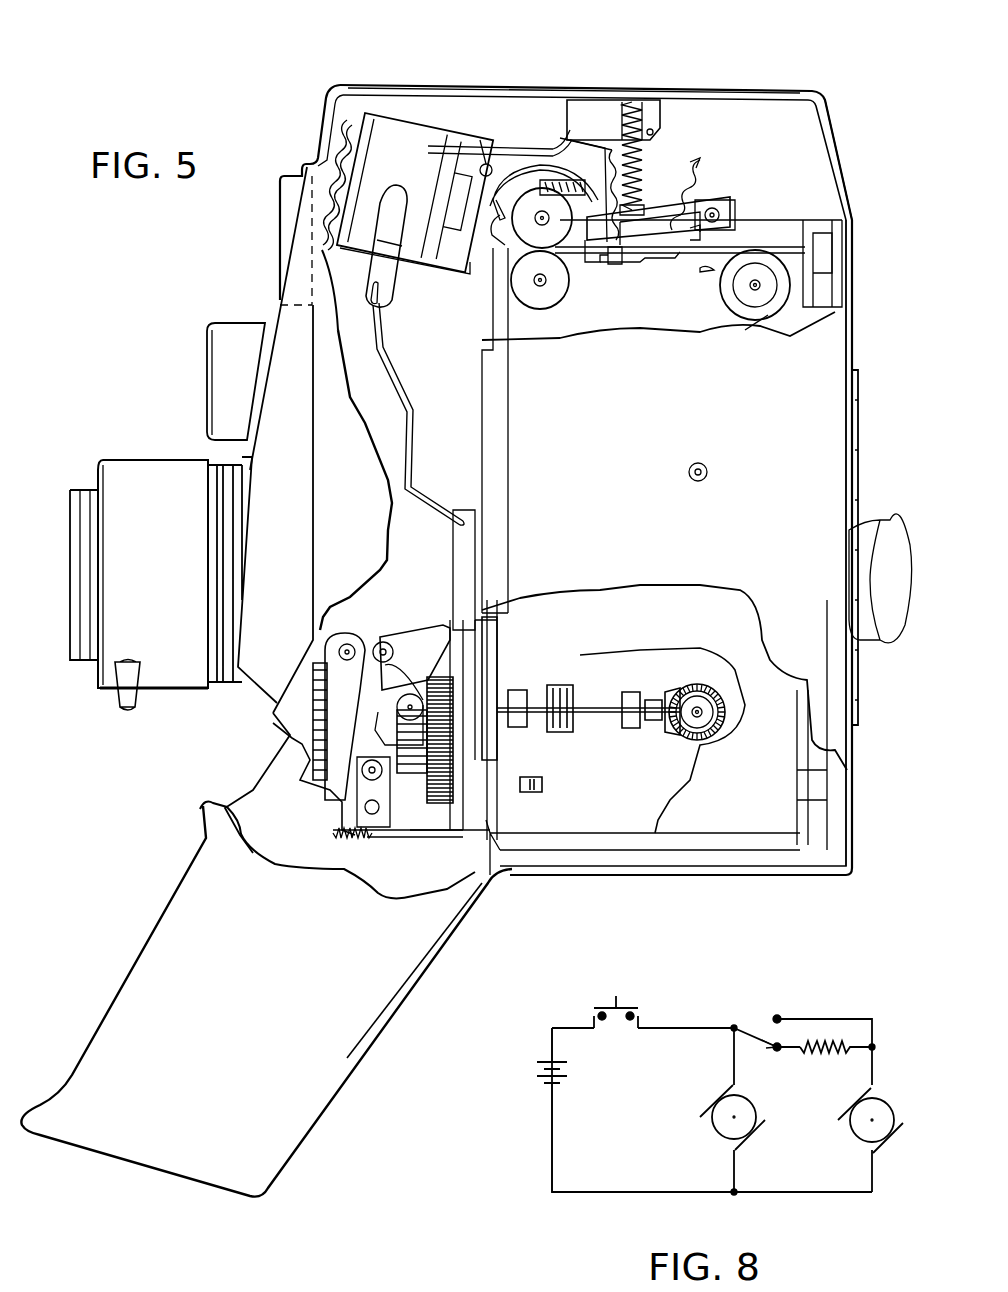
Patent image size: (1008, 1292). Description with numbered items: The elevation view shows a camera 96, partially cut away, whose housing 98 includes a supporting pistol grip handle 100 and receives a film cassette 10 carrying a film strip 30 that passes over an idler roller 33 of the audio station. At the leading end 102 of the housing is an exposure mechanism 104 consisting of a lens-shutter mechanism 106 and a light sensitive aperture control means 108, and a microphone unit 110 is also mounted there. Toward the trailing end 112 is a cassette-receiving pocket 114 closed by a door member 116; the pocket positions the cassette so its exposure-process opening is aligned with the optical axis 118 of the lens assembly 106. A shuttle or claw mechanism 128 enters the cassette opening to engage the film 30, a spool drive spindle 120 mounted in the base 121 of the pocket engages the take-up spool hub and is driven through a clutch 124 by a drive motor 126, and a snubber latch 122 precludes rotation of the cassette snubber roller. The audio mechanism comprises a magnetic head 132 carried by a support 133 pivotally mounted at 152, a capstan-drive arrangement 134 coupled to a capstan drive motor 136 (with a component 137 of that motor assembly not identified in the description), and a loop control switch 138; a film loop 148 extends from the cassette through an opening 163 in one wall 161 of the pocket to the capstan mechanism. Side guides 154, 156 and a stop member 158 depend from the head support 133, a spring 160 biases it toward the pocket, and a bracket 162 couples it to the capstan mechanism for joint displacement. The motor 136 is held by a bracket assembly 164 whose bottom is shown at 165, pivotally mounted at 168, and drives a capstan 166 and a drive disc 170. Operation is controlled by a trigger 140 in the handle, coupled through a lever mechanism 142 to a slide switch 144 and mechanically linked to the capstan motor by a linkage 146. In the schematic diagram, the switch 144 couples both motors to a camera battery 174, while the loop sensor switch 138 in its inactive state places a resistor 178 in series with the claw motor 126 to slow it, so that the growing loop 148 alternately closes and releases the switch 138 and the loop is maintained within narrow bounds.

In FIG. 5, the cassette 10 is at (780, 822).
In FIG. 5, the film strip 30 is at (588, 258).
In FIG. 5, the idler roller 33 is at (545, 305).
In FIG. 5, the camera 96 is at (449, 61).
In FIG. 5, the camera housing 98 is at (362, 85).
In FIG. 5, the pistol grip handle 100 is at (152, 962).
In FIG. 5, the leading end 102 is at (276, 312).
In FIG. 5, the exposure mechanism 104 is at (158, 402).
In FIG. 5, the lens-shutter mechanism 106 is at (125, 460).
In FIG. 5, the aperture control means 108 is at (230, 362).
In FIG. 5, the microphone unit 110 is at (278, 206).
In FIG. 5, the trailing end 112 is at (836, 148).
In FIG. 5, the cassette-receiving pocket 114 is at (826, 248).
In FIG. 5, the door member 116 is at (792, 362).
In FIG. 5, the optical axis 118 is at (50, 565).
In FIG. 5, the spool drive spindle 120 is at (680, 740).
In FIG. 5, the base of pocket 121 is at (595, 815).
In FIG. 5, the snubber latch 122 is at (545, 784).
In FIG. 5, the clutch 124 is at (572, 668).
In FIG. 5, the drive motor 126 is at (337, 703).
In FIG. 8, the drive motor 126 is at (882, 1098).
In FIG. 5, the claw mechanism 128 is at (492, 662).
In FIG. 5, the magnetic head 132 is at (680, 200).
In FIG. 5, the head support 133 is at (700, 200).
In FIG. 5, the capstan-drive arrangement 134 is at (508, 128).
In FIG. 5, the capstan drive motor 136 is at (392, 130).
In FIG. 8, the capstan drive motor 136 is at (742, 1106).
In FIG. 5, the solenoid plunger 137 is at (408, 218).
In FIG. 5, the loop sensor switch 138 is at (588, 100).
In FIG. 8, the loop sensor switch 138 is at (761, 1008).
In FIG. 5, the trigger member 140 is at (237, 780).
In FIG. 5, the lever mechanism 142 is at (398, 618).
In FIG. 5, the slide switch 144 is at (462, 508).
In FIG. 8, the slide switch 144 is at (610, 998).
In FIG. 5, the linkage 146 is at (395, 360).
In FIG. 5, the film loop 148 is at (483, 160).
In FIG. 5, the pivot mounting 152 is at (732, 212).
In FIG. 5, the side guide 154 is at (618, 268).
In FIG. 5, the side guide 156 is at (665, 268).
In FIG. 5, the stop member 158 is at (712, 228).
In FIG. 5, the spring 160 is at (655, 160).
In FIG. 5, the pocket wall 161 is at (832, 222).
In FIG. 5, the bracket 162 is at (600, 182).
In FIG. 5, the opening 163 is at (482, 330).
In FIG. 5, the bracket assembly 164 is at (440, 278).
In FIG. 5, the bracket bottom 165 is at (478, 263).
In FIG. 5, the drive capstan 166 is at (528, 175).
In FIG. 5, the pivot mounting 168 is at (510, 130).
In FIG. 5, the drive disc 170 is at (575, 135).
In FIG. 8, the camera battery 174 is at (568, 1072).
In FIG. 8, the resistor 178 is at (826, 1040).